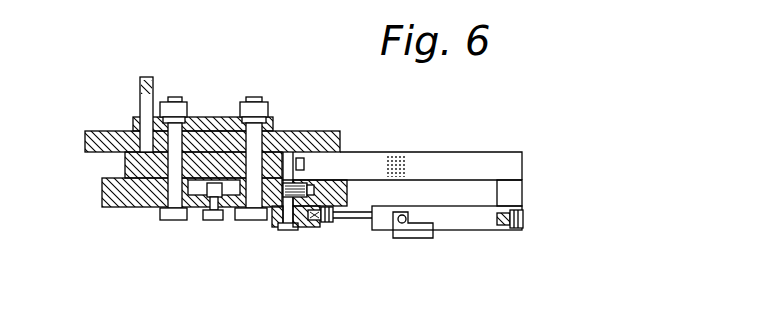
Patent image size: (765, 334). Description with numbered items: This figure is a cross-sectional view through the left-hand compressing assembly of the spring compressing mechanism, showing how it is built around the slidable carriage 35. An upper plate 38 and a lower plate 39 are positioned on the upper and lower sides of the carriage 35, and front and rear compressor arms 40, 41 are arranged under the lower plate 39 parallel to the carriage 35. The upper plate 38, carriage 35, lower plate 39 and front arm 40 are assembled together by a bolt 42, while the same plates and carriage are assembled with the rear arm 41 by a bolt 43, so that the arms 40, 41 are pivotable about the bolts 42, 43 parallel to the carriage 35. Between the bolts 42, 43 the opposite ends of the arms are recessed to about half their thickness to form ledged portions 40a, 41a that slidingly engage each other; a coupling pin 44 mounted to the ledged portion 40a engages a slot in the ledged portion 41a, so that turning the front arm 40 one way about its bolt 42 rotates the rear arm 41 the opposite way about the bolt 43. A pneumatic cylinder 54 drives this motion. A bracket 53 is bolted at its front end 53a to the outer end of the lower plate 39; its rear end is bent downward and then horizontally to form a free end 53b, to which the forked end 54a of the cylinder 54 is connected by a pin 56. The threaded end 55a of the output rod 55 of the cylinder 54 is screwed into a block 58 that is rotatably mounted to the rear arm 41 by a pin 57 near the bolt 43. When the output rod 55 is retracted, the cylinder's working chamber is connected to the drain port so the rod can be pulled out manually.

The carriage 35 is at (315, 132).
The upper plate 38 is at (228, 118).
The lower plate 39 is at (146, 188).
The front compressor arm 40 is at (108, 207).
The ledged portion 40a is at (200, 205).
The rear compressor arm 41 is at (350, 179).
The ledged portion 41a is at (200, 178).
The bolt 42 is at (178, 220).
The bolt 43 is at (252, 220).
The coupling pin 44 is at (213, 220).
The bracket 53 is at (465, 162).
The front end 53a is at (290, 170).
The free end 53b is at (524, 216).
The pneumatic cylinder 54 is at (477, 222).
The forked end 54a is at (525, 208).
The output rod 55 is at (362, 220).
The threaded end 55a is at (322, 222).
The pin 56 is at (525, 214).
The pin 57 is at (292, 229).
The block 58 is at (310, 222).